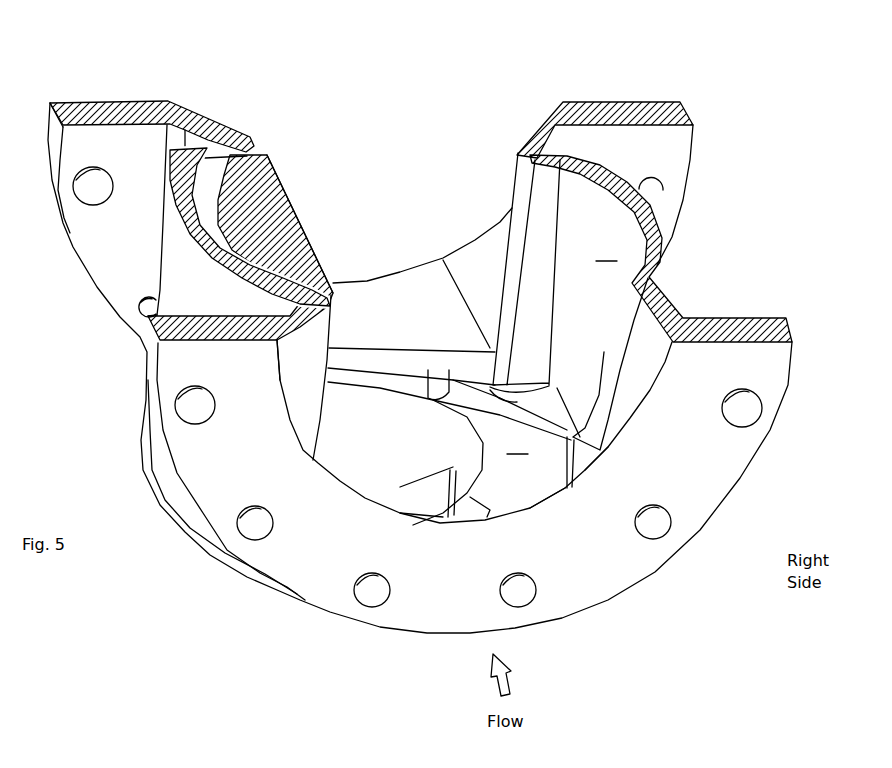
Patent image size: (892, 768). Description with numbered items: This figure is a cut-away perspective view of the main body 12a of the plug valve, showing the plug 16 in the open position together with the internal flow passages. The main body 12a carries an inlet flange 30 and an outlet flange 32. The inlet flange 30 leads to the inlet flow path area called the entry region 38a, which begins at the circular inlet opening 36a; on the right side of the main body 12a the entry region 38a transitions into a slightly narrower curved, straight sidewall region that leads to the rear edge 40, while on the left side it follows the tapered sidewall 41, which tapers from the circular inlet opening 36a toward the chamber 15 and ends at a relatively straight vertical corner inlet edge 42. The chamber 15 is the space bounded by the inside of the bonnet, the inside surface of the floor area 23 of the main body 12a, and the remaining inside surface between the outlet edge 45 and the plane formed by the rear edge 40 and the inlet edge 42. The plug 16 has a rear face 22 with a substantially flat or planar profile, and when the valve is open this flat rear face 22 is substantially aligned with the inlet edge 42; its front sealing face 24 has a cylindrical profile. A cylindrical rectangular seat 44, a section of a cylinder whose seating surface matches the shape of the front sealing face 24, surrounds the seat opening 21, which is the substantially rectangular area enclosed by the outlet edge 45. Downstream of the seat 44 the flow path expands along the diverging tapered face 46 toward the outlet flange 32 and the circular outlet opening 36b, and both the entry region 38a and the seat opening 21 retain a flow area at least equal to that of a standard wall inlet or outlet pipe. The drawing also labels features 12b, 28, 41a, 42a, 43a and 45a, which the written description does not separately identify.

The main body 12a is at (730, 230).
The left body half 12b is at (183, 540).
The chamber 15 is at (606, 252).
The plug 16 is at (283, 180).
The seat opening 21 is at (420, 285).
The rear face 22 is at (295, 210).
The floor area 23 is at (543, 421).
The front sealing face 24 is at (247, 150).
The cylinder 28 is at (401, 410).
The inlet flange 30 is at (788, 368).
The outlet flange 32 is at (688, 112).
The circular inlet opening 36a is at (550, 500).
The circular outlet opening 36b is at (170, 100).
The entry region 38a is at (318, 364).
The rear edge 40 is at (603, 390).
The tapered sidewall 41 is at (283, 308).
The face 41a is at (583, 466).
The inlet edge 42 is at (333, 333).
The rib end face 42a is at (567, 463).
The body wall 43a is at (678, 288).
The seat 44 is at (522, 186).
The outlet edge 45 is at (258, 156).
The rib edge face 45a is at (163, 158).
The tapered face 46 is at (188, 114).